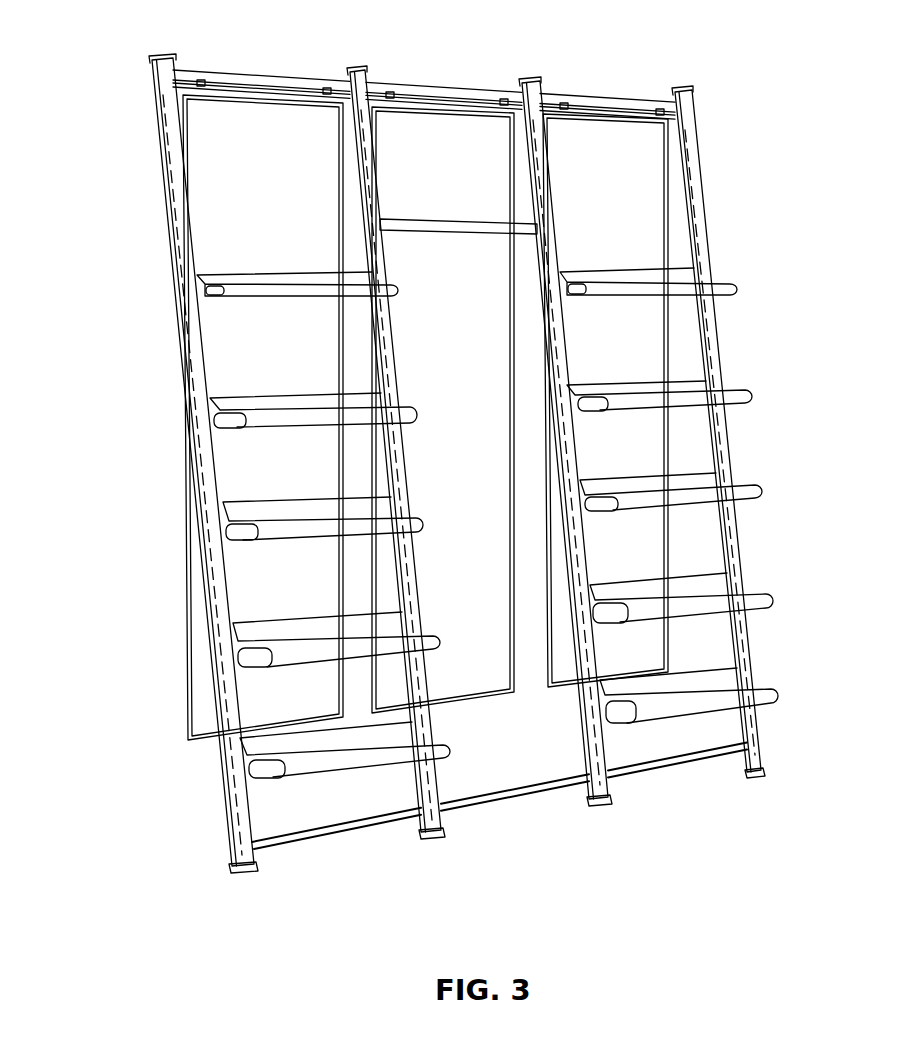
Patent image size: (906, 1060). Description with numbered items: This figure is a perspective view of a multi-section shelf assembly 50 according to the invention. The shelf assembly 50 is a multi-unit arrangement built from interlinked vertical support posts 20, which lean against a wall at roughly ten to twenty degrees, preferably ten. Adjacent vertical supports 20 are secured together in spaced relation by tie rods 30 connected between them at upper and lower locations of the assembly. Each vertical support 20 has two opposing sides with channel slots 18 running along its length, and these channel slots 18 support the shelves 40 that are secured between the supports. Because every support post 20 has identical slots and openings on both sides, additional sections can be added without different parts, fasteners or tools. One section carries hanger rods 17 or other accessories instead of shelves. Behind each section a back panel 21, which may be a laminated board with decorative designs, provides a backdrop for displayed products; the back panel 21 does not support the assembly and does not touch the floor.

The shelf assembly 50 is at (130, 54).
The vertical support post 20 is at (165, 186).
The channel slots 18 is at (187, 383).
The tie rods 30 is at (272, 78).
The back panel 21 is at (185, 675).
The hanger rods 17 is at (467, 223).
The shelves 40 is at (263, 778).